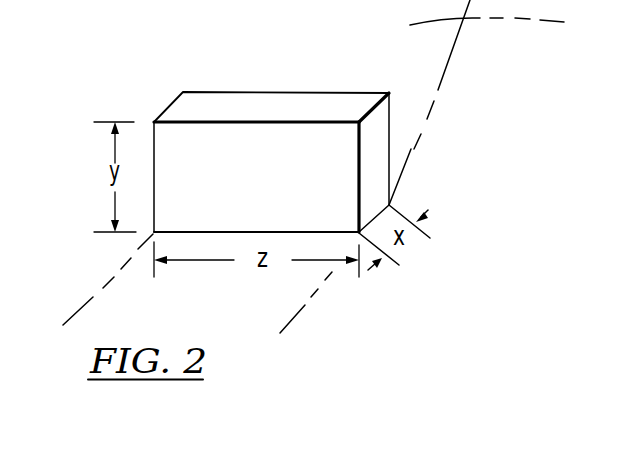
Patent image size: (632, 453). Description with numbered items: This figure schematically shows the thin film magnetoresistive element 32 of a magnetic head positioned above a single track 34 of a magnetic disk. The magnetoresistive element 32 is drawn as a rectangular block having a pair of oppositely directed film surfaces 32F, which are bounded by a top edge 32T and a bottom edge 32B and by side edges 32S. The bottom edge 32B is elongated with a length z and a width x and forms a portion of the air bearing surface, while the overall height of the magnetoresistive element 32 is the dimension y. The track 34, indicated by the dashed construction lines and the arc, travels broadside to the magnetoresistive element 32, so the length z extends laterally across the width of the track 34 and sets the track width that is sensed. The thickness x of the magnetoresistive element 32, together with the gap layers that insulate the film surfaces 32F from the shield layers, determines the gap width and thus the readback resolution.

The magnetoresistive element 32 is at (149, 80).
The top edge 32T is at (236, 100).
The side edges 32S is at (153, 165).
The film surfaces 32F is at (318, 91).
The bottom edge 32B is at (250, 234).
The track 34 is at (333, 166).